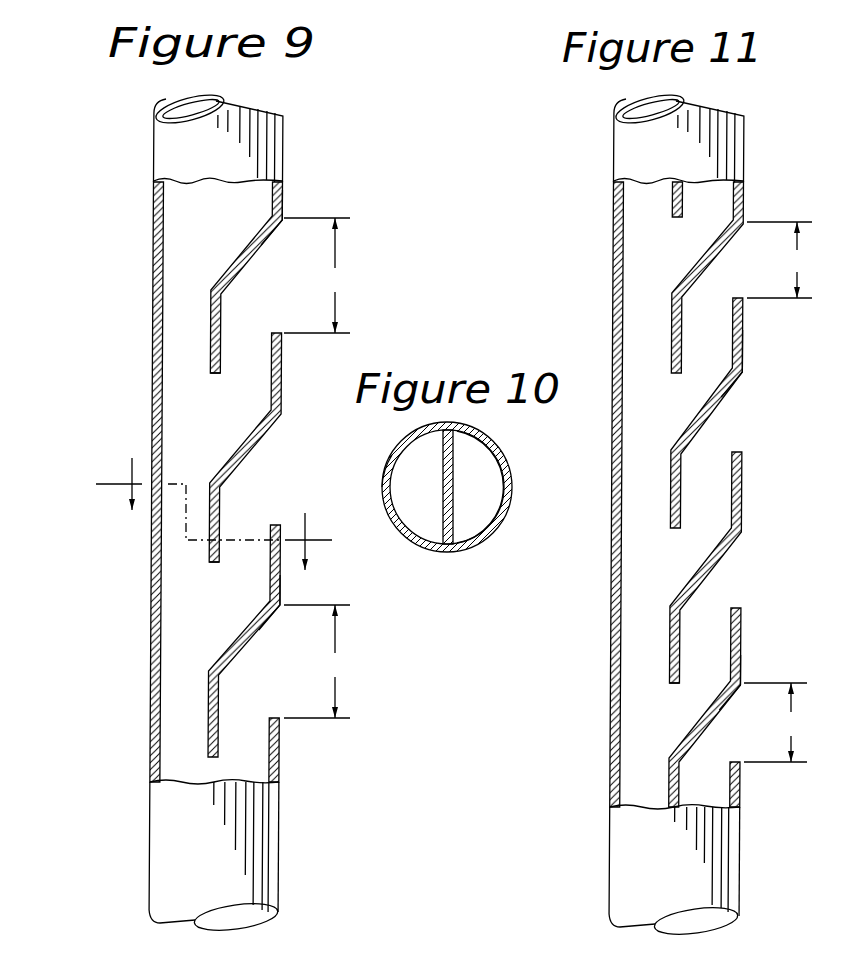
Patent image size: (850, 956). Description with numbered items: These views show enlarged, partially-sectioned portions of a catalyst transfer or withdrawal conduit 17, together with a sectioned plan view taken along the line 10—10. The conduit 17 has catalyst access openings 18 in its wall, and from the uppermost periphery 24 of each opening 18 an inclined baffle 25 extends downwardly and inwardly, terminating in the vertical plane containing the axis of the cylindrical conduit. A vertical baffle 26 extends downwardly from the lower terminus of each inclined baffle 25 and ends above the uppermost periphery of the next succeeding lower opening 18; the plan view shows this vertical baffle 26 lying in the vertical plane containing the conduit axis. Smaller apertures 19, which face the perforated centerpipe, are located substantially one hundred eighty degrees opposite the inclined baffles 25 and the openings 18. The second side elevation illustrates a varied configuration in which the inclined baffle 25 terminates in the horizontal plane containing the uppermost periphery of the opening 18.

In FIG. 9, the section line 10 is at (215, 514).
In FIG. 9, the catalyst transfer conduit 17 is at (153, 158).
In FIG. 10, the catalyst transfer conduit 17 is at (485, 532).
In FIG. 11, the catalyst transfer conduit 17 is at (615, 153).
In FIG. 9, the catalyst access opening 18 is at (317, 468).
In FIG. 11, the catalyst access opening 18 is at (778, 492).
In FIG. 9, the smaller aperture 19 is at (158, 292).
In FIG. 10, the smaller aperture 19 is at (385, 487).
In FIG. 11, the smaller aperture 19 is at (613, 292).
In FIG. 9, the uppermost periphery 24 is at (272, 220).
In FIG. 11, the uppermost periphery 24 is at (732, 373).
In FIG. 9, the inclined baffle 25 is at (240, 445).
In FIG. 10, the inclined baffle 25 is at (475, 478).
In FIG. 11, the inclined baffle 25 is at (697, 420).
In FIG. 9, the vertical baffle 26 is at (222, 362).
In FIG. 10, the vertical baffle 26 is at (443, 507).
In FIG. 11, the vertical baffle 26 is at (670, 203).